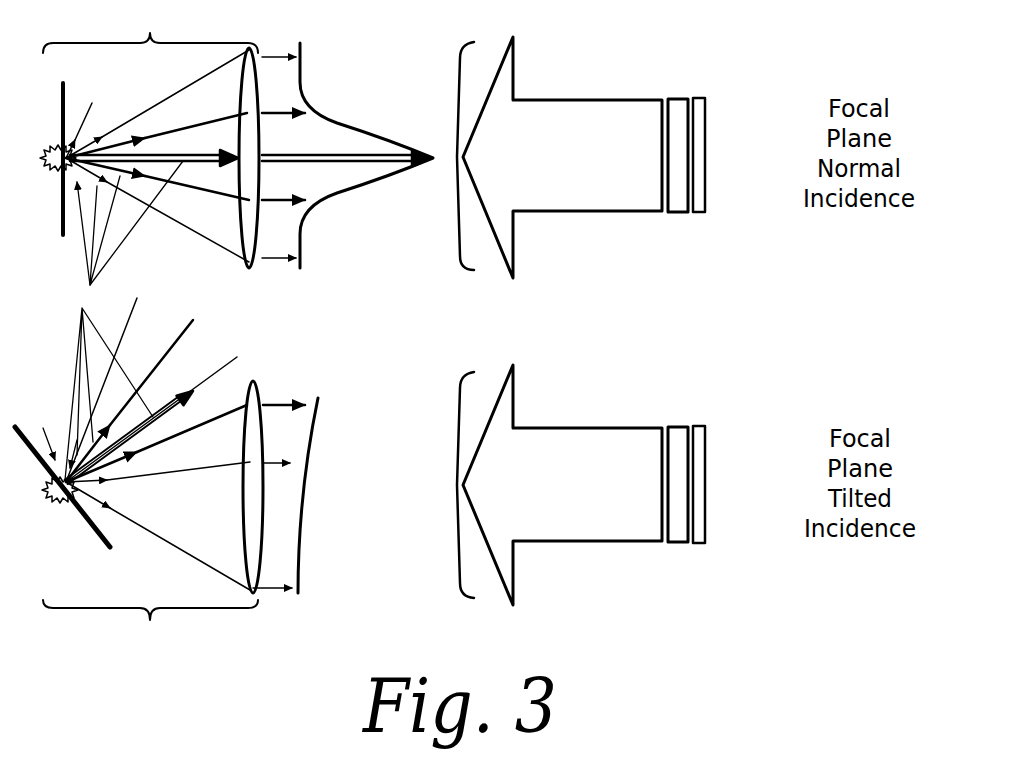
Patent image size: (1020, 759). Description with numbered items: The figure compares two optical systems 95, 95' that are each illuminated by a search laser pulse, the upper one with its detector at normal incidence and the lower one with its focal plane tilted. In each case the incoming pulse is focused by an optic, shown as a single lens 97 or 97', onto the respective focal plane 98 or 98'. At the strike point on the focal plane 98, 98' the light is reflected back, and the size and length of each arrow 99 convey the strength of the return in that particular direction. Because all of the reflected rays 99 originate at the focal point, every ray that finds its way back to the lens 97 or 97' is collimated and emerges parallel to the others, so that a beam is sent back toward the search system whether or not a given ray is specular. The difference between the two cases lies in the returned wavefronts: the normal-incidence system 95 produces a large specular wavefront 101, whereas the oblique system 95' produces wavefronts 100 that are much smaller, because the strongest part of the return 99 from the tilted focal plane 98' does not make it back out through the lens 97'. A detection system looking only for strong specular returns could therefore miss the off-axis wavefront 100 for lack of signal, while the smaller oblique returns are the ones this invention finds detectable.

The optical system 95 is at (150, 28).
The optical system 95' is at (150, 627).
The lens 97 is at (231, 176).
The lens 97' is at (280, 470).
The focal plane 98 is at (98, 148).
The focal plane 98' is at (61, 495).
The reflected rays 99 is at (113, 320).
The wavefront 100 is at (306, 457).
The wavefront 101 is at (381, 183).